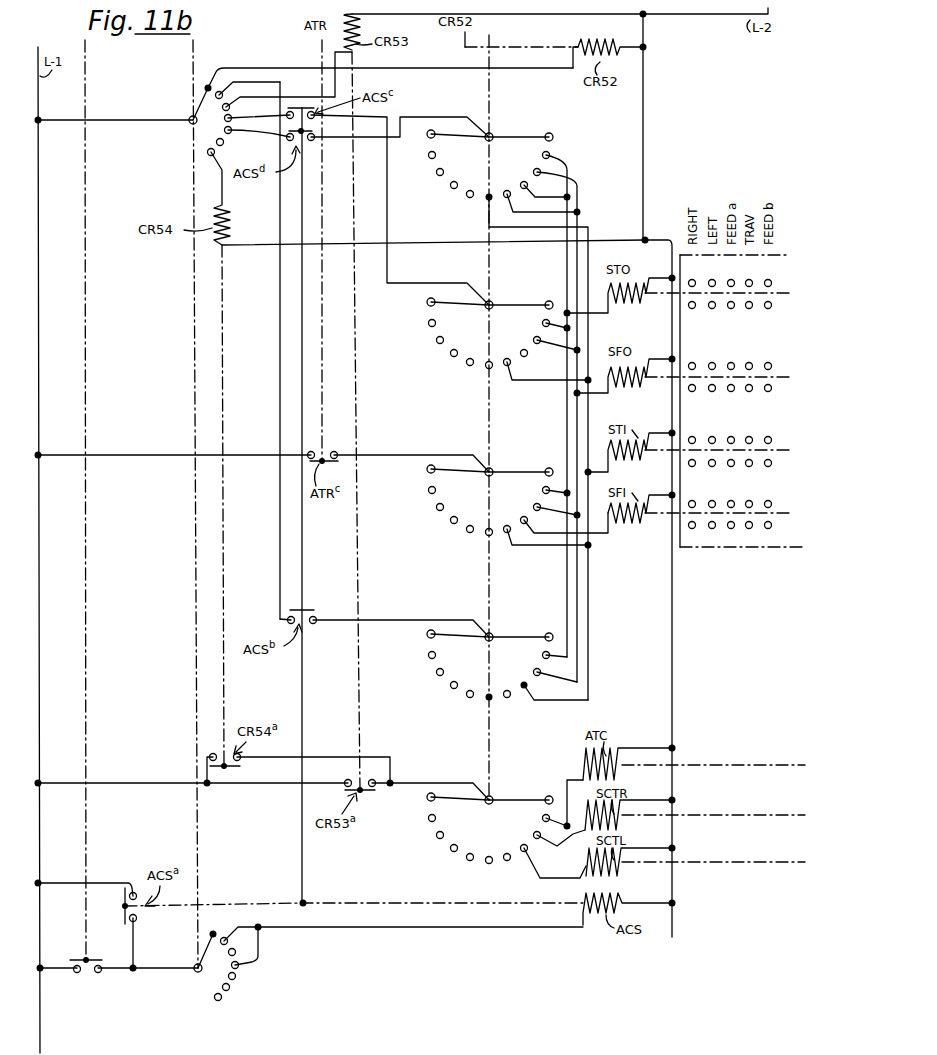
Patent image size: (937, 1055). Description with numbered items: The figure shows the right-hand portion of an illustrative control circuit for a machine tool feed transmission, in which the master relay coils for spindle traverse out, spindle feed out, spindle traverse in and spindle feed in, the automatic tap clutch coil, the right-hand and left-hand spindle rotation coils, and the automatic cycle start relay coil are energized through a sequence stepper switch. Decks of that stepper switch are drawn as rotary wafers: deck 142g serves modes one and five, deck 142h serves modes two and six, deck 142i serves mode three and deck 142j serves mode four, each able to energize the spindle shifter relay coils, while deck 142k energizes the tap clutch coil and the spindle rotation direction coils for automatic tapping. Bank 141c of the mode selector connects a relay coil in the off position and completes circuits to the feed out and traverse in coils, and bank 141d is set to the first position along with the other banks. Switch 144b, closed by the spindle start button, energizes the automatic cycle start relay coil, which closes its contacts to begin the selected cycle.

The selector switch bank 141c is at (187, 131).
The selector switch bank 141d is at (196, 972).
The stepper switch deck 142j is at (452, 190).
The stepper switch deck 142i is at (452, 358).
The stepper switch deck 142h is at (452, 527).
The stepper switch deck 142g is at (458, 695).
The stepper switch deck 142k is at (456, 855).
The spindle start switch 144b is at (90, 985).